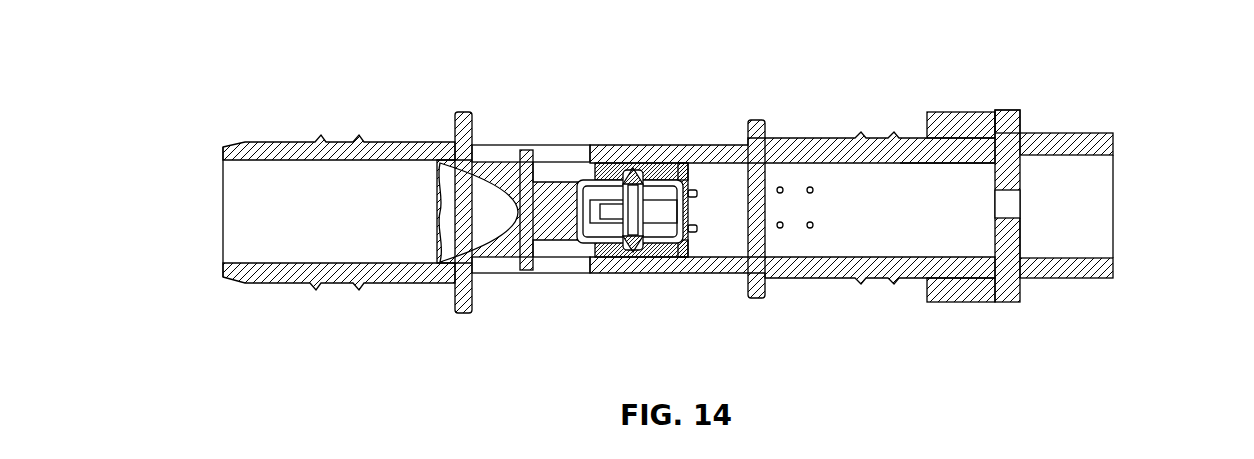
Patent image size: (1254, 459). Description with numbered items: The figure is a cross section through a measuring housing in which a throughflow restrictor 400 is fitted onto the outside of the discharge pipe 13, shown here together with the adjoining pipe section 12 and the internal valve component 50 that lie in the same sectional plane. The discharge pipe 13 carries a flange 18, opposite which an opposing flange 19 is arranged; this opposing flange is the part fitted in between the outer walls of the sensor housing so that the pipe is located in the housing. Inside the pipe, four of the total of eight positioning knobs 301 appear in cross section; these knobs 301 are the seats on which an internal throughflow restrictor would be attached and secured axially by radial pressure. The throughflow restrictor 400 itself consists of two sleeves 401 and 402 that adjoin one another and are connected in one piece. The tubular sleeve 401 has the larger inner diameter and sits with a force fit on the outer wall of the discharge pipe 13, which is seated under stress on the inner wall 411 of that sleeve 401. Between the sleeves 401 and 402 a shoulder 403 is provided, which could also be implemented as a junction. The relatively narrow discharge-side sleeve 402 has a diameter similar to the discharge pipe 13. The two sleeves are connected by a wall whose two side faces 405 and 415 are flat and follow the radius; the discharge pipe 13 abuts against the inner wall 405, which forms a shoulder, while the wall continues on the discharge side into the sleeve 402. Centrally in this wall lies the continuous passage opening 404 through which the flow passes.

The first tubular member 12 is at (271, 262).
The discharge pipe 13 is at (897, 255).
The flange 18 is at (755, 118).
The opposing flange 19 is at (466, 112).
The valve 50 is at (655, 208).
The positioning knobs 301 is at (782, 187).
The throughflow restrictor 400 is at (1101, 205).
The tubular sleeve 401 is at (993, 112).
The discharge-side sleeve 402 is at (1080, 278).
The shoulder 403 is at (1020, 118).
The passage opening 404 is at (1008, 203).
The inner wall 405 is at (993, 237).
The inner wall 411 is at (952, 167).
The side face 415 is at (1023, 237).